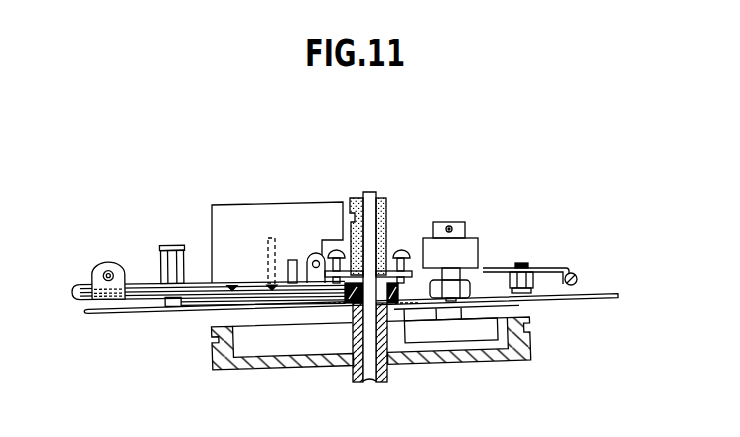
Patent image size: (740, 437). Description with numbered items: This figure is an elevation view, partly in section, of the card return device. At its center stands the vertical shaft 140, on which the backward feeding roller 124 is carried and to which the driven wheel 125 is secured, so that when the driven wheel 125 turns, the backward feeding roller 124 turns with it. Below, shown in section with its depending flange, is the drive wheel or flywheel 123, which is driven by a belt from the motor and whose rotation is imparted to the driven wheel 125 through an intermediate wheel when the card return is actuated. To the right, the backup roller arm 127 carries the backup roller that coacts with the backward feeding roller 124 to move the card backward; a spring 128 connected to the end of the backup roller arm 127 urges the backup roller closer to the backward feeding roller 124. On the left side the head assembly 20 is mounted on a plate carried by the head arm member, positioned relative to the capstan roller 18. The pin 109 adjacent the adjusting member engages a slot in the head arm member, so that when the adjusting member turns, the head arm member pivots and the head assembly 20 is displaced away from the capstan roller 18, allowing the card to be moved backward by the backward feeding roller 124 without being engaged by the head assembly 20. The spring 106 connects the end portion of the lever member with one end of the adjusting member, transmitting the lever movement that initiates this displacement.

The capstan roller 18 is at (388, 213).
The head assembly 20 is at (354, 225).
The spring 106 is at (84, 284).
The pin 109 is at (296, 262).
The drive wheel 123 is at (213, 366).
The backward feeding roller 124 is at (475, 245).
The driven wheel 125 is at (483, 333).
The backup roller arm 127 is at (550, 268).
The spring 128 is at (578, 277).
The shaft 140 is at (462, 306).